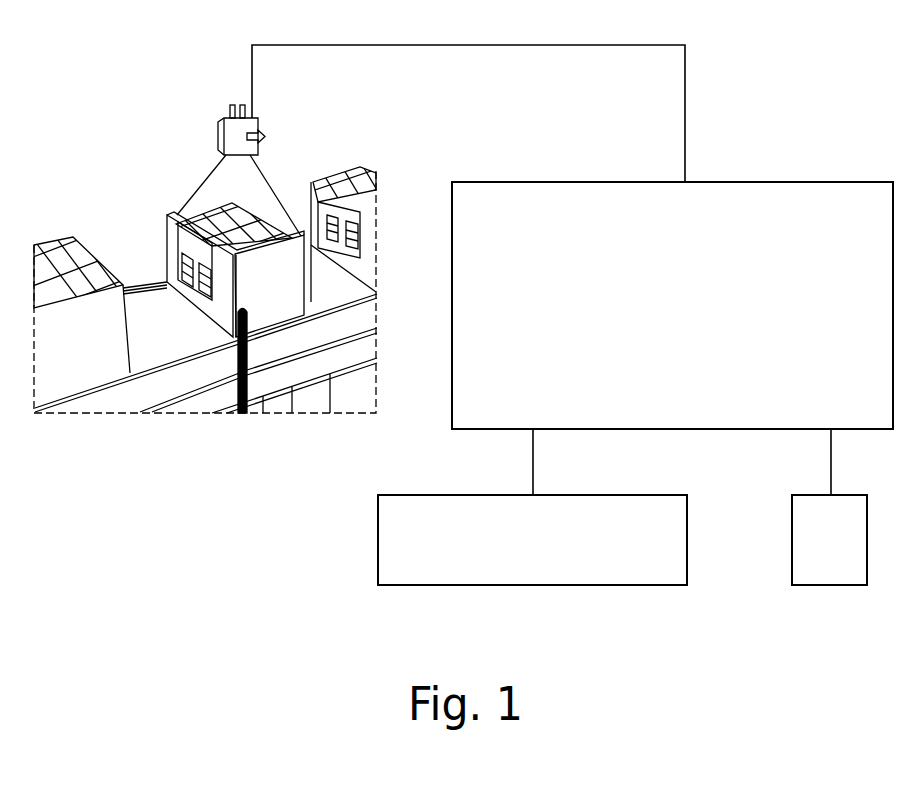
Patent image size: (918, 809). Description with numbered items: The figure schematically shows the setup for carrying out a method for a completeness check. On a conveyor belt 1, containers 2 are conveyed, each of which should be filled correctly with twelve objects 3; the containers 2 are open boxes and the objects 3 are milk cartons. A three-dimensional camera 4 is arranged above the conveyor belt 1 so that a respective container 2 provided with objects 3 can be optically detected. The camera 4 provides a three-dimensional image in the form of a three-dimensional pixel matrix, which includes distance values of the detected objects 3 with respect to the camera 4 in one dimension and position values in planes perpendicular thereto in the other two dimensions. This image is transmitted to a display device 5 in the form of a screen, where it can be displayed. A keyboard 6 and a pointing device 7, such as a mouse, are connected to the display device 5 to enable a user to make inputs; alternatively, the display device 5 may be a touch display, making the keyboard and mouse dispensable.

The conveyor belt 1 is at (187, 330).
The container 2 is at (82, 370).
The object 3 is at (211, 218).
The 3D camera 4 is at (217, 125).
The display device 5 is at (664, 317).
The keyboard 6 is at (525, 552).
The pointing device 7 is at (822, 552).